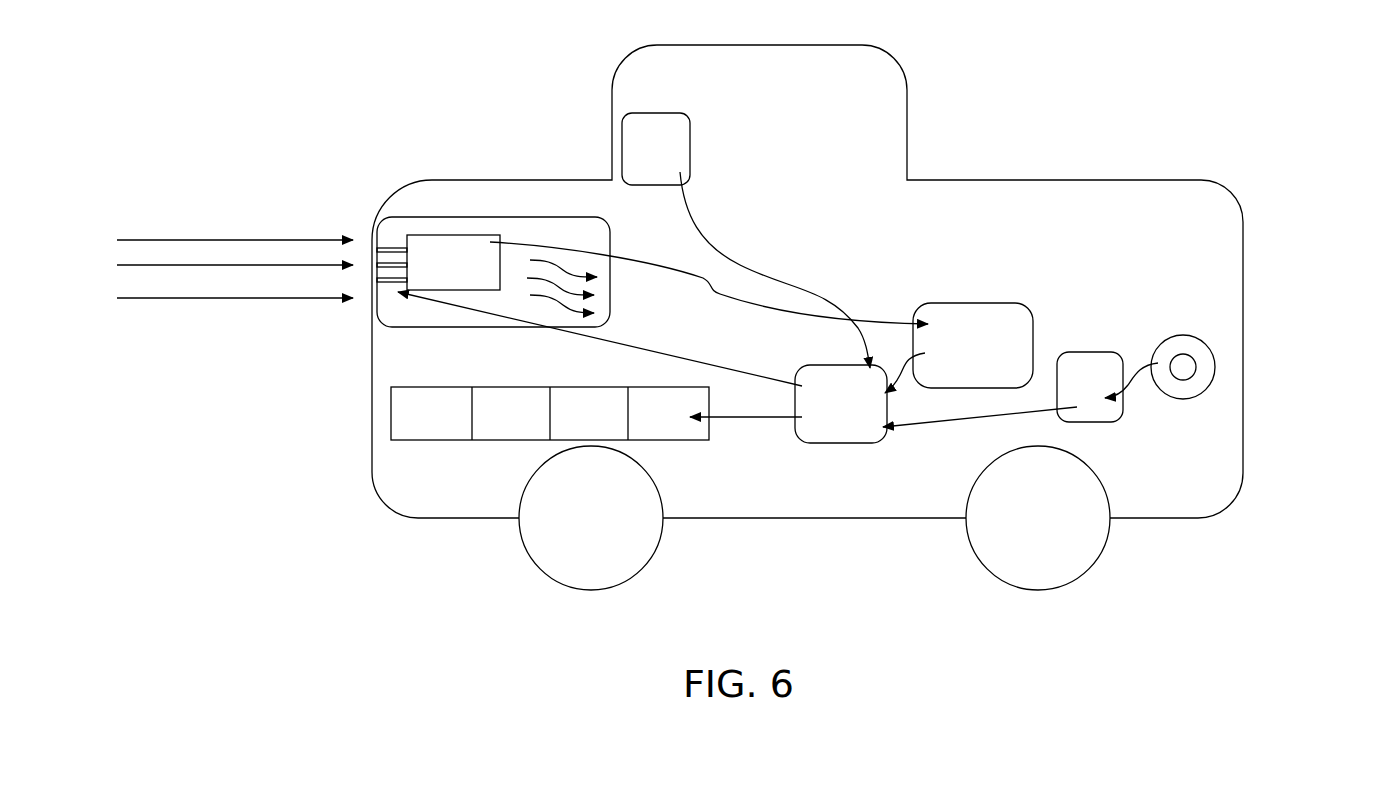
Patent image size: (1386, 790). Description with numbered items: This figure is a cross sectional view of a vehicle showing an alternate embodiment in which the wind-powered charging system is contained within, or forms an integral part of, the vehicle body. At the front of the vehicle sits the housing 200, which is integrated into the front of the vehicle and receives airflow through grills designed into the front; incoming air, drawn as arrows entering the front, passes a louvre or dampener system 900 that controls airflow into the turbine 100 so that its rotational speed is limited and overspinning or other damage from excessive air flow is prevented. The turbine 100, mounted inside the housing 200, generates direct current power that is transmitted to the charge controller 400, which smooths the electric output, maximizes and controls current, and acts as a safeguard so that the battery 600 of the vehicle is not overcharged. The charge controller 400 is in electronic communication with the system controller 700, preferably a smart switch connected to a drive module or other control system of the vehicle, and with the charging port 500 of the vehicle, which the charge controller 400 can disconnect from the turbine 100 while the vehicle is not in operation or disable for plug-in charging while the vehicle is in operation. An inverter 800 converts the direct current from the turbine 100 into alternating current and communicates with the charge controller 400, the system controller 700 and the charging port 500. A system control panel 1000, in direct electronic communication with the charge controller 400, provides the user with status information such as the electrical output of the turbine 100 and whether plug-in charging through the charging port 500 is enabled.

The turbine 100 is at (420, 235).
The housing 200 is at (393, 218).
The charge controller 400 is at (973, 303).
The charging port 500 is at (1213, 355).
The battery 600 is at (391, 440).
The system controller 700 is at (828, 443).
The inverter 800 is at (1123, 408).
The louvre or dampener system 900 is at (372, 240).
The system control panel 1000 is at (622, 128).